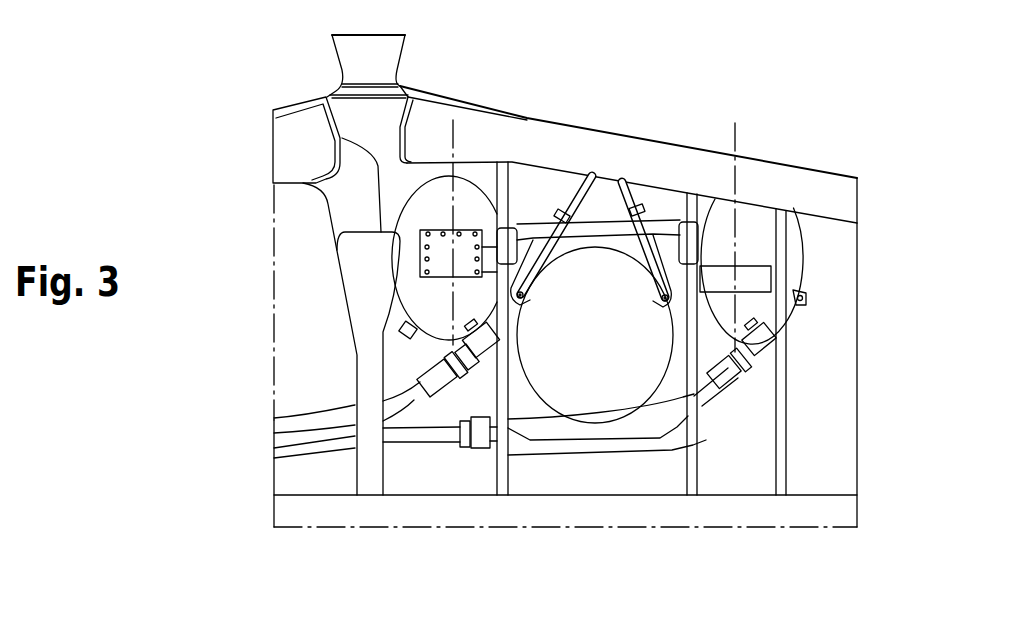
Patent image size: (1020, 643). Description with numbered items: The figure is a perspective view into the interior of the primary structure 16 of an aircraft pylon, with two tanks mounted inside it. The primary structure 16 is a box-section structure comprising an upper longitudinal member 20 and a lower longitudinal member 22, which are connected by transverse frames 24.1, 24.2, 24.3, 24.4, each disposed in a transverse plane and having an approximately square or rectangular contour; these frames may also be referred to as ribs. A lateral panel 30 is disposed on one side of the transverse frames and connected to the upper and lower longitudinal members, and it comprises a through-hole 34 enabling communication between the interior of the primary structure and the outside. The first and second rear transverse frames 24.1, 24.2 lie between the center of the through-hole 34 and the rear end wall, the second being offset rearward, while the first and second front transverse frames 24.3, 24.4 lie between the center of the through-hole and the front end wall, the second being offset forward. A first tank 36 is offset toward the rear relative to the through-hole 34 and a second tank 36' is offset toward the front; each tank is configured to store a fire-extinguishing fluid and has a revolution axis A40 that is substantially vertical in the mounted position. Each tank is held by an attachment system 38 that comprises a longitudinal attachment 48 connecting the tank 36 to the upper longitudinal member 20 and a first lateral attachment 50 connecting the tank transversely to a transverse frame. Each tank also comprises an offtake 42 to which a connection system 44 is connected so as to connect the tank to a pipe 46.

The primary structure 16 is at (273, 109).
The upper longitudinal member 20 is at (665, 283).
The lower longitudinal member 22 is at (548, 512).
The first rear transverse frame 24.1 is at (693, 188).
The second rear transverse frame 24.2 is at (783, 195).
The first front transverse frame 24.3 is at (502, 158).
The second front transverse frame 24.4 is at (370, 247).
The lateral panel 30 is at (840, 265).
The through-hole 34 is at (602, 383).
The tank 36 is at (804, 267).
The second tank 36' is at (360, 258).
The attachment system 38 is at (437, 236).
The offtake 42 is at (770, 346).
The connection system 44 is at (740, 381).
The pipe 46 is at (314, 418).
The longitudinal attachment 48 is at (553, 216).
The first lateral attachment 50 is at (417, 255).
The revolution axis A40 is at (403, 296).